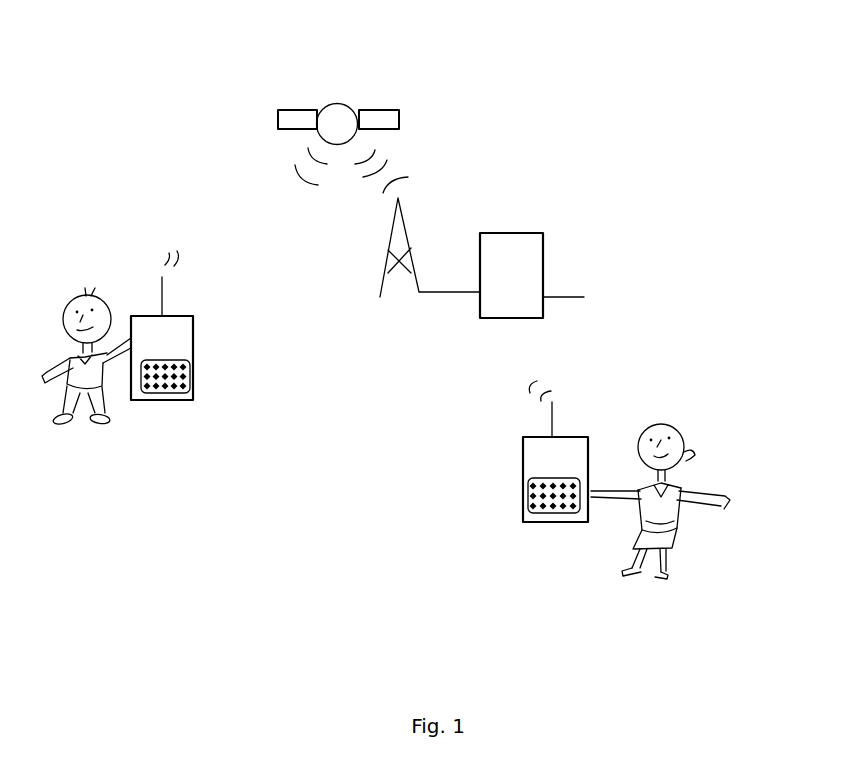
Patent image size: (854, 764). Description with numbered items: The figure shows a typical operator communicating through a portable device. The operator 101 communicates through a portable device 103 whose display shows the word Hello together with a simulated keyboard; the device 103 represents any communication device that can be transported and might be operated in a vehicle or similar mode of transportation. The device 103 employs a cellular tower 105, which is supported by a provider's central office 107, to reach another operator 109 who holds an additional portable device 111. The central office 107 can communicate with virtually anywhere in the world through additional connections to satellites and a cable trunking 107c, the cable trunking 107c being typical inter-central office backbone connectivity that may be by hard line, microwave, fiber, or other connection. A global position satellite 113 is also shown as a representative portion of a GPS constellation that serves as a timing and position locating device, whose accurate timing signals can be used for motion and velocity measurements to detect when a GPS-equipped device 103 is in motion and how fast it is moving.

The operator 101 is at (70, 298).
The portable device 103 is at (140, 316).
The cellular tower 105 is at (382, 281).
The central office 107 is at (494, 233).
The cable trunking 107c is at (583, 297).
The operator 109 is at (659, 424).
The portable device 111 is at (580, 437).
The global position satellite 113 is at (340, 104).